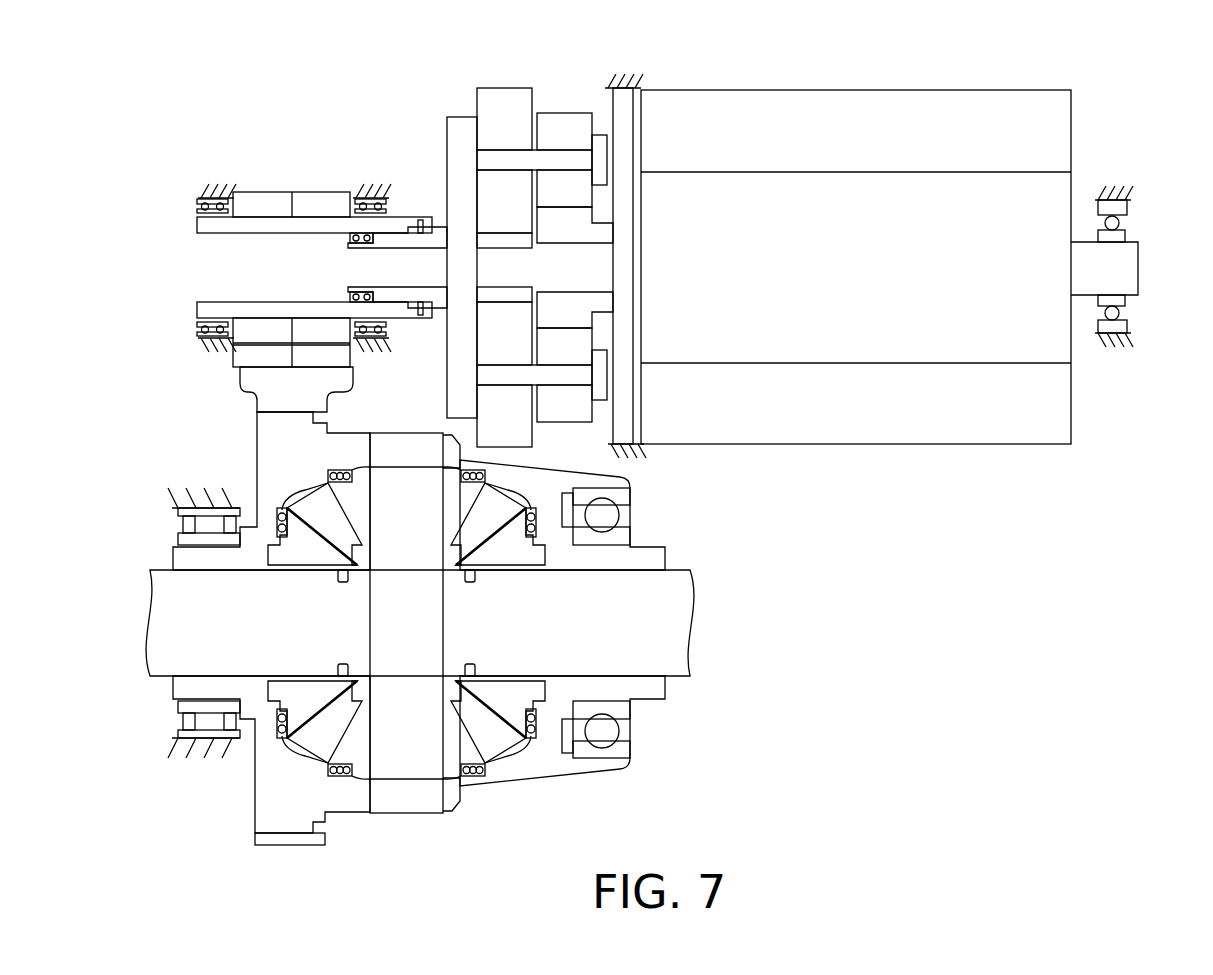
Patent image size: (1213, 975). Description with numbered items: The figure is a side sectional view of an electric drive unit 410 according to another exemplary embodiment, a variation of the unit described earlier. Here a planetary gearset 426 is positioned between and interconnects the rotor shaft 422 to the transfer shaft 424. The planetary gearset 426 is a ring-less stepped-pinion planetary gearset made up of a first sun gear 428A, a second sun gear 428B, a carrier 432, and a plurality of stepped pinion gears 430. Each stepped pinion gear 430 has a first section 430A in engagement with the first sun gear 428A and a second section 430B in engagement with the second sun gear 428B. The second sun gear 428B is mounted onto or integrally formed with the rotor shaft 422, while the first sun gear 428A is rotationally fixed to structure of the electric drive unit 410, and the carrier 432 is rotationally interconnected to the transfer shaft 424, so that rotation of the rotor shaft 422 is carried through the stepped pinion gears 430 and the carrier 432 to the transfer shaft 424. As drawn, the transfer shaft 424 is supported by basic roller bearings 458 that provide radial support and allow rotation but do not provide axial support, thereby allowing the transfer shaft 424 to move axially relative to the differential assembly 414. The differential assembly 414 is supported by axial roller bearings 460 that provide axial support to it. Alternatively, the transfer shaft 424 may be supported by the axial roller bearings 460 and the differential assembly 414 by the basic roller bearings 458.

The electric drive unit 410 is at (883, 682).
The differential assembly 414 is at (462, 803).
The rotor shaft 422 is at (512, 267).
The transfer shaft 424 is at (218, 222).
The planetary gearset 426 is at (590, 90).
The first sun gear 428A is at (567, 213).
The second sun gear 428B is at (507, 238).
The stepped pinion gear 430 is at (534, 265).
The first section 430A is at (570, 120).
The second section 430B is at (497, 108).
The carrier 432 is at (465, 130).
The basic roller bearing 458 is at (210, 207).
The axial roller bearing 460 is at (1115, 225).